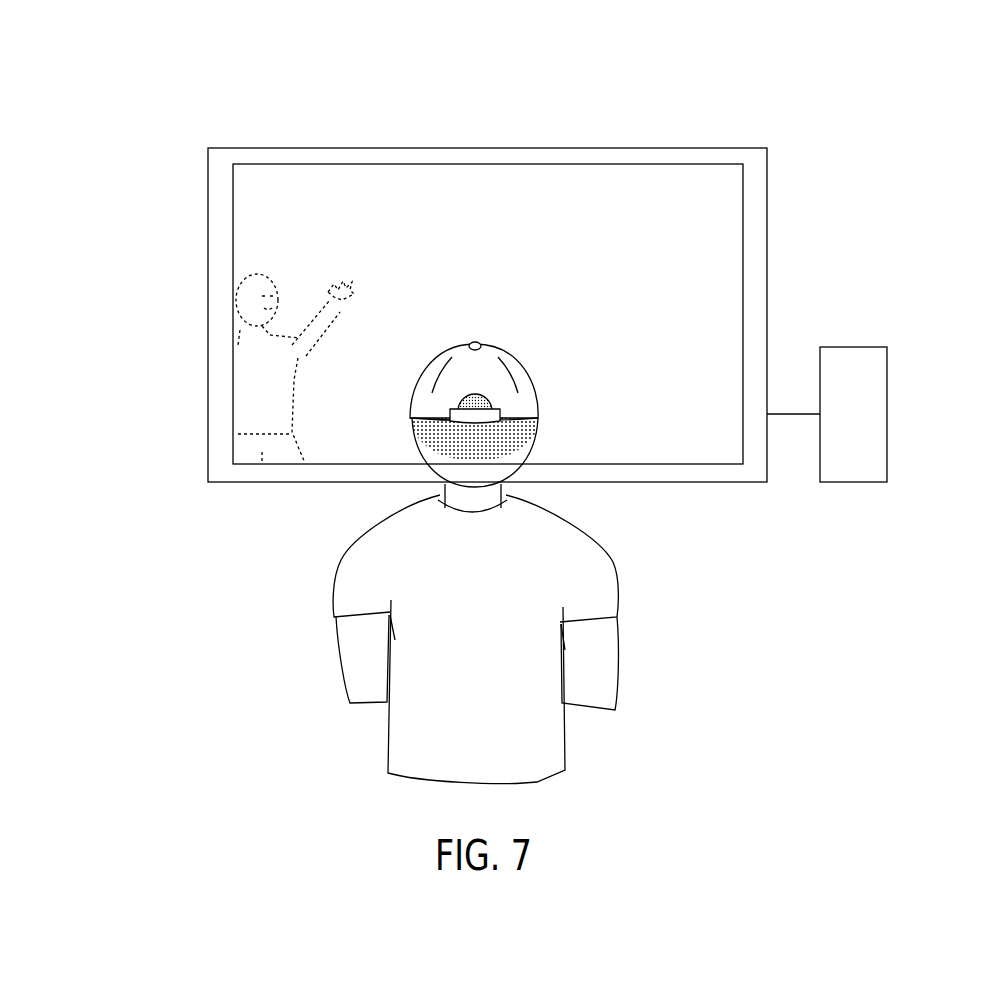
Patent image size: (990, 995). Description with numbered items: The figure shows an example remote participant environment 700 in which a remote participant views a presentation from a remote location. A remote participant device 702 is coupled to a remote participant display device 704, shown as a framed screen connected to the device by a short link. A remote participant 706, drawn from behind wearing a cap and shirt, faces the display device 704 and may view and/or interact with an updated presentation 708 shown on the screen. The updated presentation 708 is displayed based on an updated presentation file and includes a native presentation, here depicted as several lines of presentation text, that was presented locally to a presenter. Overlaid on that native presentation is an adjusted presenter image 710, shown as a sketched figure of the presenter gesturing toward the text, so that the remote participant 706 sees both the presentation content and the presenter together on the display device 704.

The remote participant environment 700 is at (855, 82).
The remote participant device 702 is at (872, 444).
The remote participant display device 704 is at (238, 148).
The remote participant 706 is at (487, 655).
The updated presentation 708 is at (521, 199).
The adjusted presenter image 710 is at (244, 279).